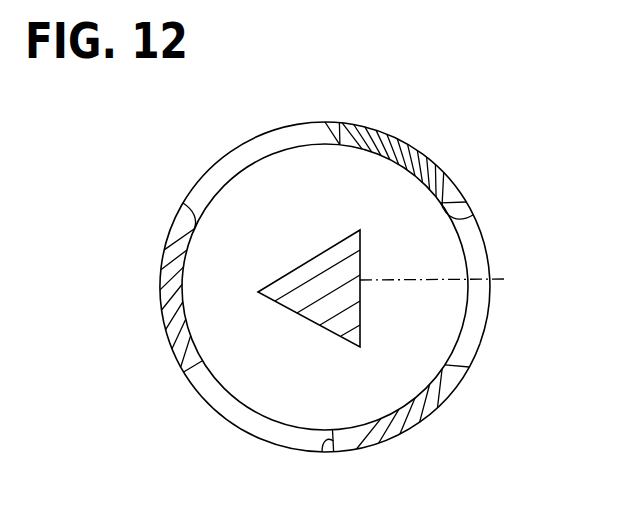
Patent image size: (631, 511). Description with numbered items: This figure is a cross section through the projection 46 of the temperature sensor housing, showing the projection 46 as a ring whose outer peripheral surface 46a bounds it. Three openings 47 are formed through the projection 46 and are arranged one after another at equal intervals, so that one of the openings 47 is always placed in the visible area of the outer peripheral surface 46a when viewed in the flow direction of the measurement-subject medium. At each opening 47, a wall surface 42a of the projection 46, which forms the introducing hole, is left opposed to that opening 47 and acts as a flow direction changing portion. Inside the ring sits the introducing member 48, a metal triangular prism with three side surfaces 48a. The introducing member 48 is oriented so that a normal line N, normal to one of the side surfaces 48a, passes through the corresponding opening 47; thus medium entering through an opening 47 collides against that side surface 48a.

The projection 46 is at (420, 150).
The outer peripheral surface 46a is at (449, 392).
The wall surface 42a is at (380, 155).
The opening 47 is at (186, 210).
The introducing member 48 is at (306, 272).
The side surface 48a is at (277, 281).
The normal line N is at (507, 279).